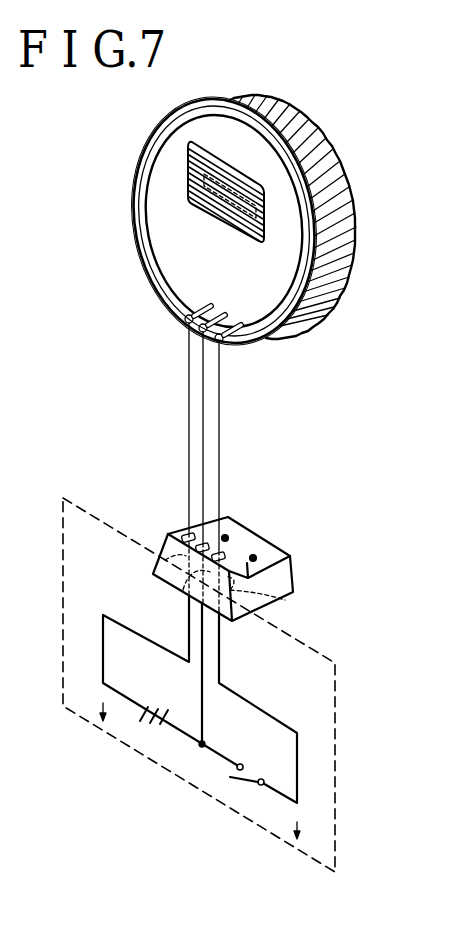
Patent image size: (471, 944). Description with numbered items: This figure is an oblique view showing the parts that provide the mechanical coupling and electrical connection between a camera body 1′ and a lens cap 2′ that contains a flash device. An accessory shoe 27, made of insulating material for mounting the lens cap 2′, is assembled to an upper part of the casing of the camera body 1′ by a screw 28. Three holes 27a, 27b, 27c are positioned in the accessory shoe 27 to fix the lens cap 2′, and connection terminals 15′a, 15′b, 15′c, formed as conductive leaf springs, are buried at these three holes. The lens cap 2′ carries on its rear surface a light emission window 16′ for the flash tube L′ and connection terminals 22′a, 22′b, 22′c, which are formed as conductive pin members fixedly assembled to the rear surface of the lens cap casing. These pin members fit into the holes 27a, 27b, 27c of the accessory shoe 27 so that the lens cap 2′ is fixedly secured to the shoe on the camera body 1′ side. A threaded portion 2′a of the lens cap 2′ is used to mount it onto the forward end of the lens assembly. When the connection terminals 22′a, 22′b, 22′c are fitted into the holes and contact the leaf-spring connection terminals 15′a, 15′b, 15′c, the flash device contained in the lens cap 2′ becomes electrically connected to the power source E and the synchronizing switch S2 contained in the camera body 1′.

The lens cap 2′ is at (327, 156).
The threaded portion 2′a is at (308, 306).
The light emission window 16′ is at (242, 236).
The flash tube L′ is at (212, 214).
The connection terminal 22′a is at (185, 319).
The connection terminal 22′b is at (200, 332).
The connection terminal 22′c is at (222, 342).
The accessory shoe 27 is at (291, 578).
The hole 27a is at (190, 535).
The hole 27b is at (209, 546).
The hole 27c is at (226, 557).
The screw 28 is at (228, 536).
The connection terminal 15′a is at (165, 560).
The connection terminal 15′b is at (183, 590).
The connection terminal 15′c is at (285, 600).
The camera body 1′ is at (336, 773).
The power source E is at (152, 724).
The synchronizing switch S2 is at (262, 786).